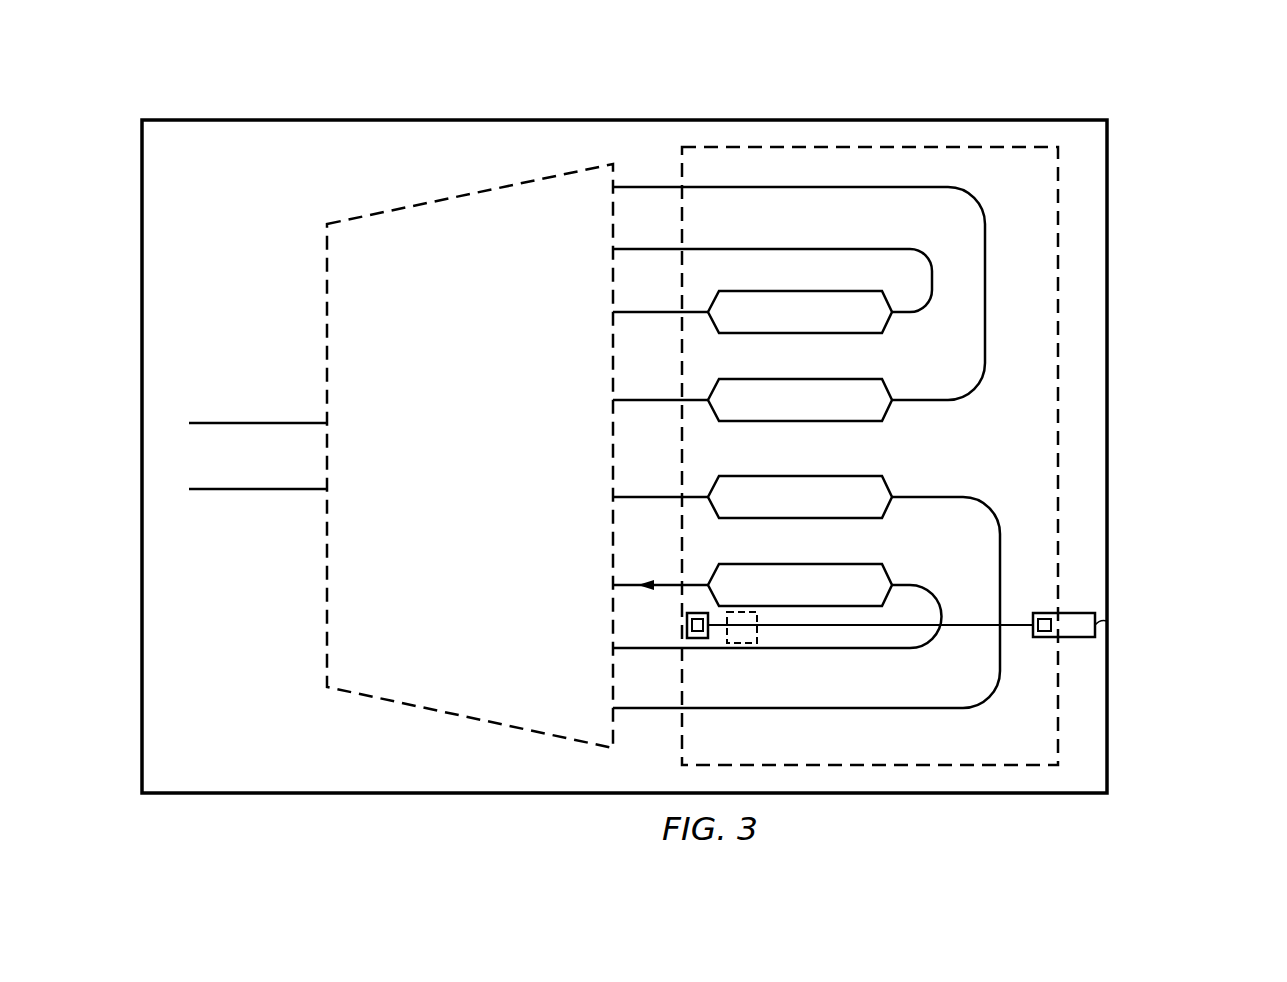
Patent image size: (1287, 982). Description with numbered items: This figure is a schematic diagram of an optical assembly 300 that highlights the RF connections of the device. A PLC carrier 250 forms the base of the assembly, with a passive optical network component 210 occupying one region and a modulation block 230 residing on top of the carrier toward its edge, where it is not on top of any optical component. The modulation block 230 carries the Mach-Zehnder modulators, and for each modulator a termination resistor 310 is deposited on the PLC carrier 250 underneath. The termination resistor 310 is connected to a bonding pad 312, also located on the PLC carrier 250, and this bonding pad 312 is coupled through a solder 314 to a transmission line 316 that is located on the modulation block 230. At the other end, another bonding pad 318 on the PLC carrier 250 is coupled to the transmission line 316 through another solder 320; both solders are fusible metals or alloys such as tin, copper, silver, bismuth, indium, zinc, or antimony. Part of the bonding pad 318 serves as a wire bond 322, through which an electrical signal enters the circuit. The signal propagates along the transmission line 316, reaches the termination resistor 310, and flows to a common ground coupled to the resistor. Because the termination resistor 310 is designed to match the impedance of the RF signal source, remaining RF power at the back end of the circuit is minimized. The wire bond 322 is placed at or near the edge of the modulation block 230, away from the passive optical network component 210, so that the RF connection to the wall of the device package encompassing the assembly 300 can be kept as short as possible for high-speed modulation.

The assembly 300 is at (216, 84).
The passive optical network component 210 is at (469, 193).
The modulation block 230 is at (681, 147).
The PLC carrier 250 is at (323, 766).
The termination resistor 310 is at (743, 645).
The bonding pad 312 is at (686, 618).
The solder 314 is at (700, 637).
The transmission line 316 is at (966, 624).
The bonding pad 318 is at (1070, 632).
The solder 320 is at (1045, 637).
The wire bond 322 is at (1086, 624).